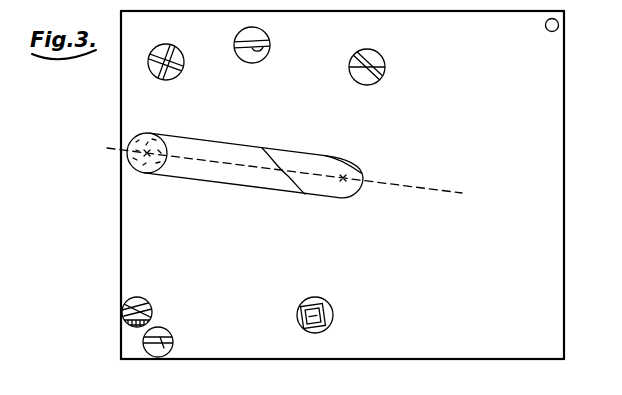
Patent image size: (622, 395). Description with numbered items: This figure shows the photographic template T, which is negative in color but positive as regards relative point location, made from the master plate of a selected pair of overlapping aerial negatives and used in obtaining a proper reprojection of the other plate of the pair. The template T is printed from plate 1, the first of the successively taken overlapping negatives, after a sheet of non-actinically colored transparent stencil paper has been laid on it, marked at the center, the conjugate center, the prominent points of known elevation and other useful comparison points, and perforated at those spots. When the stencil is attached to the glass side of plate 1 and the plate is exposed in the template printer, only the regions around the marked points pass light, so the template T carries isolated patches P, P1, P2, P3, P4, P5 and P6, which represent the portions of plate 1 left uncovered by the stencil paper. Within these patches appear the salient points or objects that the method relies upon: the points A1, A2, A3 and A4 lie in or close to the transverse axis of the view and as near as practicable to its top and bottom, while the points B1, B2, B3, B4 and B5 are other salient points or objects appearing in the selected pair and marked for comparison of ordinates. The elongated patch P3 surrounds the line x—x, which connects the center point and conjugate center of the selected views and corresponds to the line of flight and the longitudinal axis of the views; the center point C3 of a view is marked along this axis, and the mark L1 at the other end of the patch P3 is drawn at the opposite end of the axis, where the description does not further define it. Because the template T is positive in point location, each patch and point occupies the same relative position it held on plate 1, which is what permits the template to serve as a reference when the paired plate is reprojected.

The template T is at (565, 118).
The plate 1 is at (555, 23).
The uncovered portion of plate P is at (170, 44).
The salient point A1 is at (168, 80).
The uncovered portion of plate P1 is at (265, 33).
The salient point B1 is at (263, 58).
The uncovered portion of plate P2 is at (357, 54).
The salient point B2 is at (375, 52).
The salient point A3 is at (382, 63).
The uncovered portion of plate P3 is at (240, 144).
The line of flight x is at (108, 151).
The tube end face L1 is at (146, 160).
The center point C3 is at (349, 176).
The salient point A2 is at (152, 303).
The uncovered portion of plate P4 is at (138, 297).
The salient point B3 is at (136, 324).
The uncovered portion of plate P5 is at (173, 340).
The salient point B4 is at (165, 352).
The uncovered portion of plate P6 is at (311, 298).
The salient point B5 is at (333, 316).
The salient point A4 is at (330, 323).